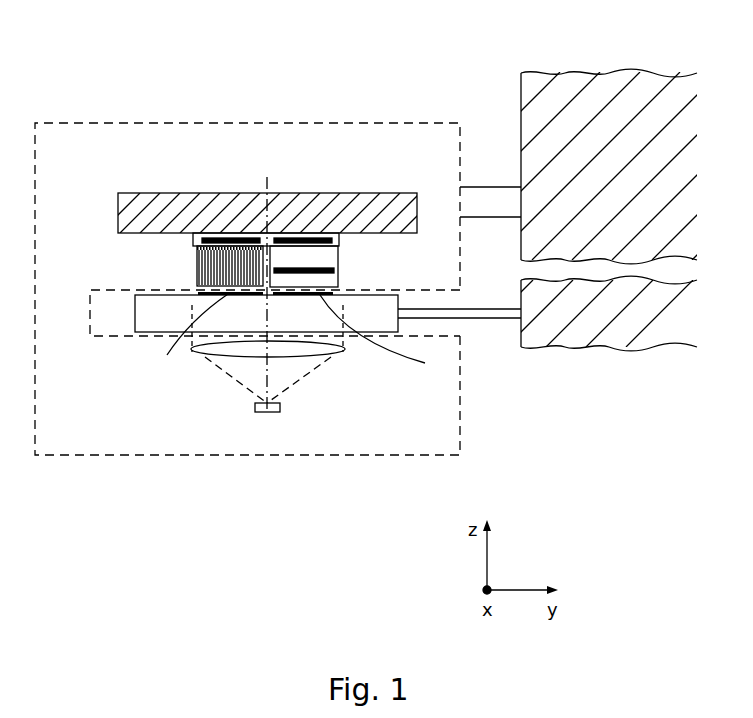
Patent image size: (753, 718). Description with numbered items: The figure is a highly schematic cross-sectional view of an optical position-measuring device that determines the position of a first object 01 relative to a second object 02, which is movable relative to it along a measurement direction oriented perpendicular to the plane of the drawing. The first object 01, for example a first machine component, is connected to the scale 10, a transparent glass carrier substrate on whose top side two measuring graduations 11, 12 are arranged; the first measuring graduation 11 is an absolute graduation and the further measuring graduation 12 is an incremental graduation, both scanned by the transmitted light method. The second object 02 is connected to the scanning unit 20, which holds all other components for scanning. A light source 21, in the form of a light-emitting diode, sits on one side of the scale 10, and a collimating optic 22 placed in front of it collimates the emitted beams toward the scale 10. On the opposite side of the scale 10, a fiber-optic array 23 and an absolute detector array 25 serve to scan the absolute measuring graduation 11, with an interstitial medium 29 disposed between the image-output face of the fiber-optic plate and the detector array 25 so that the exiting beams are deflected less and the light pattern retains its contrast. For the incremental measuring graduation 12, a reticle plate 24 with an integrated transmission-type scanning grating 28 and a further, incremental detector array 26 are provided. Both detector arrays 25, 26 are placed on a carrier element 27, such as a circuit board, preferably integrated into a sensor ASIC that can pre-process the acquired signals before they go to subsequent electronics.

The first object 01 is at (600, 335).
The second object 02 is at (577, 80).
The scale 10 is at (155, 313).
The first measuring graduation 11 is at (190, 339).
The second measuring graduation 12 is at (378, 342).
The scanning unit 20 is at (101, 443).
The light source 21 is at (292, 407).
The collimating optic 22 is at (352, 352).
The fiber-optic array 23 is at (187, 266).
The reticle plate 24 is at (350, 262).
The detector array 25 is at (233, 241).
The further detector array 26 is at (292, 241).
The carrier element 27 is at (430, 214).
The scanning grating 28 is at (322, 268).
The interstitial medium 29 is at (193, 245).